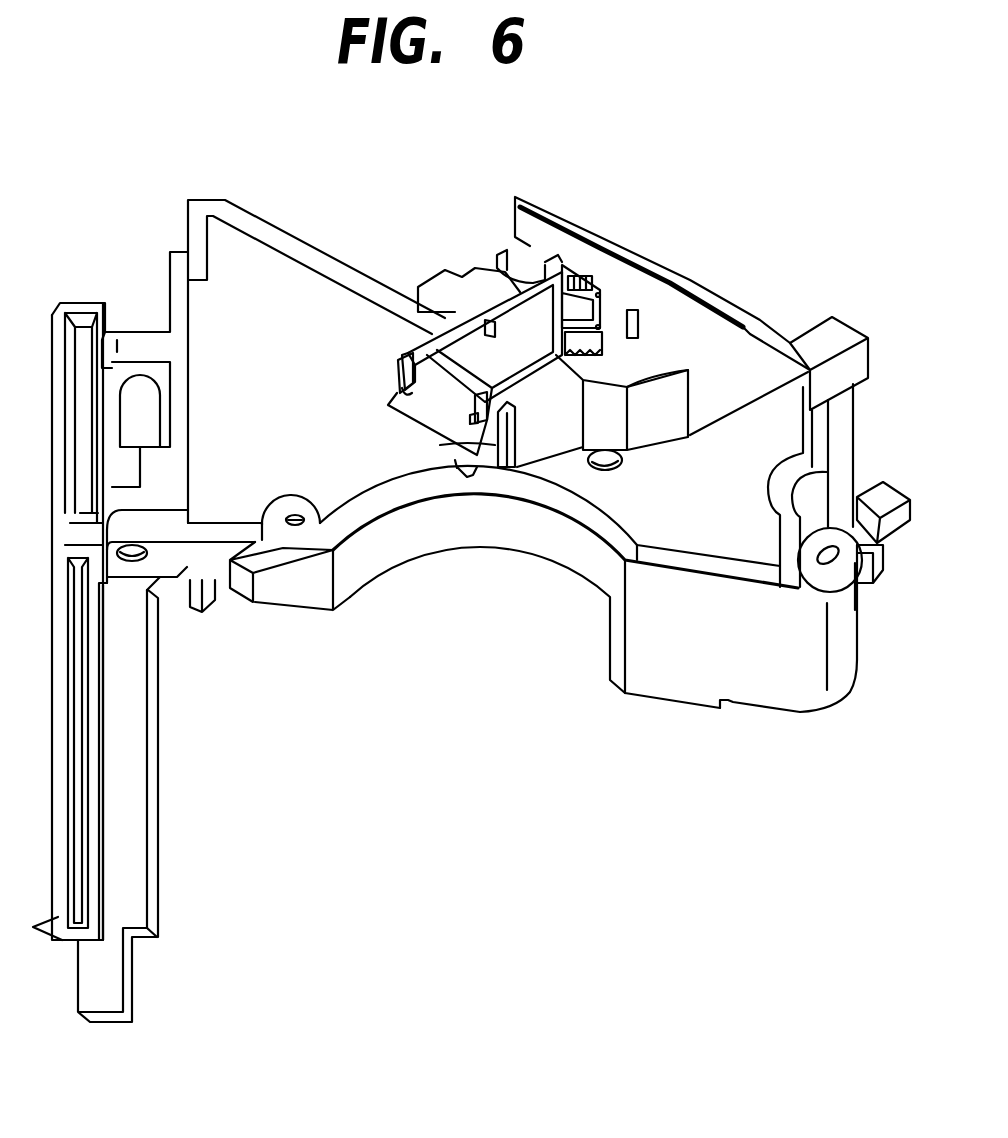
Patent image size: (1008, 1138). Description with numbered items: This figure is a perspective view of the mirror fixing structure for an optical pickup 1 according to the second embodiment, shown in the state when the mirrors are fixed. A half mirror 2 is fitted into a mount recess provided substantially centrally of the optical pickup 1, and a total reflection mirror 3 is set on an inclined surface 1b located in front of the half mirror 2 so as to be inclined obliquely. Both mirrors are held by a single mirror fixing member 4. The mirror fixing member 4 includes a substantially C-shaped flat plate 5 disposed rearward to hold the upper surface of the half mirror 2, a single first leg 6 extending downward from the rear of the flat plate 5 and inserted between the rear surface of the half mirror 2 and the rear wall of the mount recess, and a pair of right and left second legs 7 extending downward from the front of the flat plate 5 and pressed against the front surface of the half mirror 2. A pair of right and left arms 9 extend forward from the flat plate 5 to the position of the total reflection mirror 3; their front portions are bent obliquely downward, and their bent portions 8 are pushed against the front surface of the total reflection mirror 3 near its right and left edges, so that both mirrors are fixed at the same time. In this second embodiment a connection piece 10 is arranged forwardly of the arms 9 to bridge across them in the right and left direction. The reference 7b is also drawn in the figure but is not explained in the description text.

The optical pickup 1 is at (707, 288).
The inclined surface 1b is at (572, 440).
The half mirror 2 is at (580, 310).
The total reflection mirror 3 is at (432, 417).
The mirror fixing member 4 is at (559, 260).
The flat plate 5 is at (593, 298).
The first leg 6 is at (603, 340).
The second leg 7 is at (532, 268).
The holder bent portion 7b is at (513, 273).
The bent portion 8 is at (410, 397).
The arm 9 is at (500, 318).
The connection piece 10 is at (460, 380).